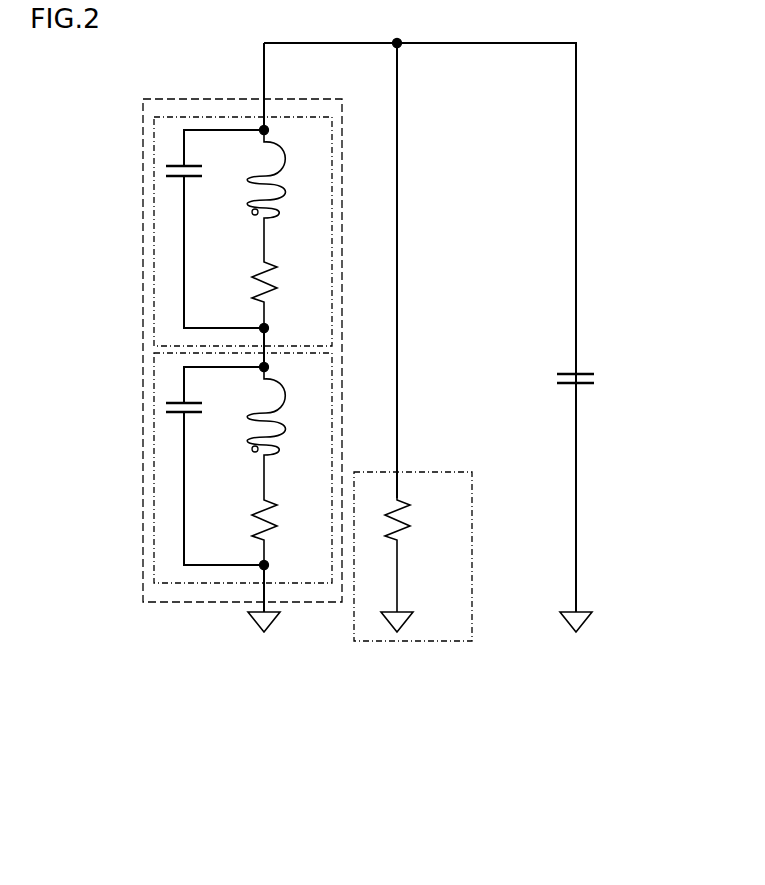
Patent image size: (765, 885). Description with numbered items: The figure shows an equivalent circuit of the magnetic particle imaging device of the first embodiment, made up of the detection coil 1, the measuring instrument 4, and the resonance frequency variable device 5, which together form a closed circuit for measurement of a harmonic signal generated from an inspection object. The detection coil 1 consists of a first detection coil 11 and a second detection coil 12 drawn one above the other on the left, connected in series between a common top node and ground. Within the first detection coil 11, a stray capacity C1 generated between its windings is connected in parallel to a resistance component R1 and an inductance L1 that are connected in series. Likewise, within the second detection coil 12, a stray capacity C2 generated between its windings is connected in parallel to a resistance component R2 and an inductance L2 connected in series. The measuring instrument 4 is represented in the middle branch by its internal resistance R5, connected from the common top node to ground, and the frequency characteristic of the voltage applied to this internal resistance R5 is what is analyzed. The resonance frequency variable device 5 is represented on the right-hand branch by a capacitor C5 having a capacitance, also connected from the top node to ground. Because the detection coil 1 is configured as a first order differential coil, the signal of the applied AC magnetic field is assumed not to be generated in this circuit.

The detection coil 1 is at (143, 99).
The first detection coil 11 is at (154, 233).
The second detection coil 12 is at (154, 477).
The measuring instrument 4 is at (438, 642).
The resonance frequency variable device 5 is at (608, 337).
The stray capacity C1 is at (191, 158).
The inductance L1 is at (279, 195).
The resistance component R1 is at (282, 294).
The stray capacity C2 is at (191, 393).
The inductance L2 is at (280, 432).
The resistance component R2 is at (283, 531).
The internal resistance R5 is at (416, 555).
The capacitor C5 is at (584, 327).